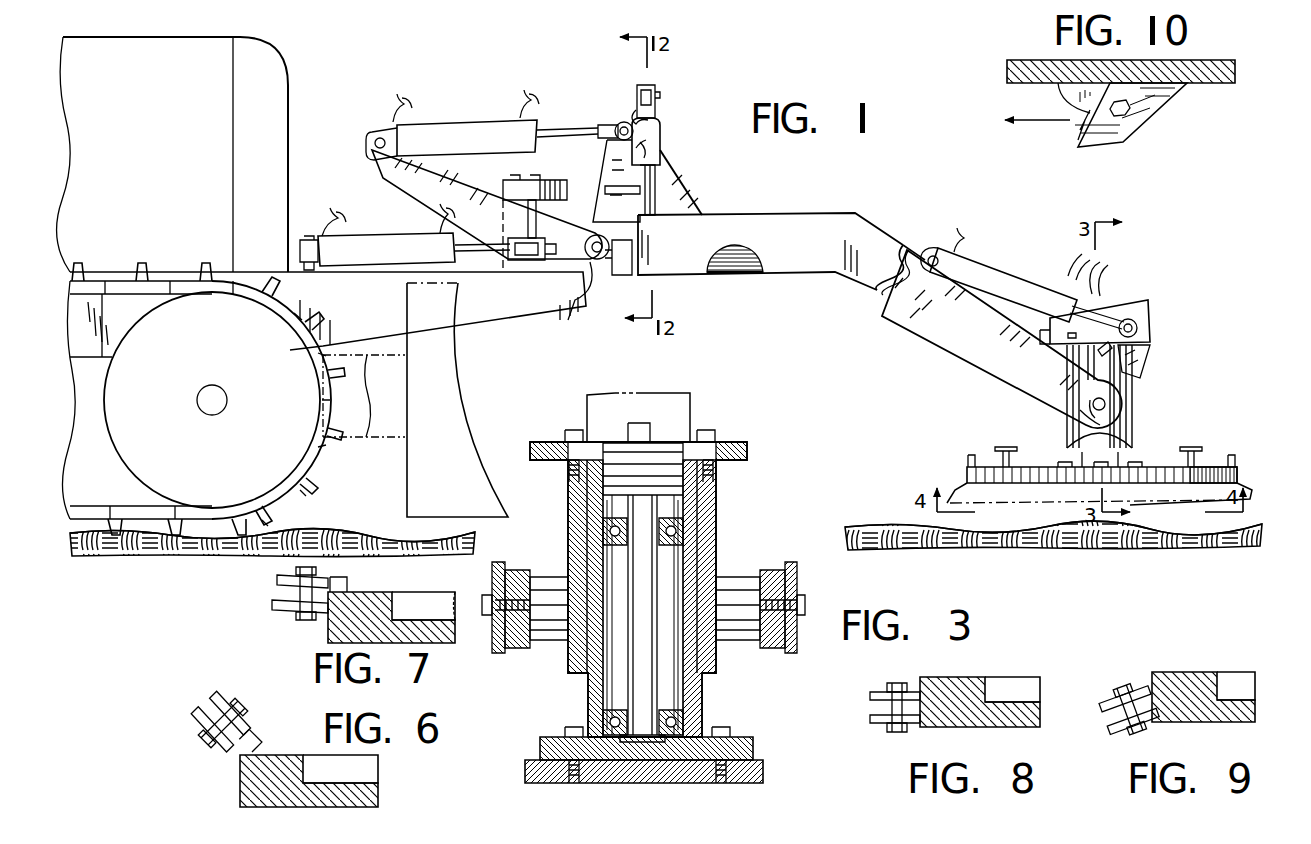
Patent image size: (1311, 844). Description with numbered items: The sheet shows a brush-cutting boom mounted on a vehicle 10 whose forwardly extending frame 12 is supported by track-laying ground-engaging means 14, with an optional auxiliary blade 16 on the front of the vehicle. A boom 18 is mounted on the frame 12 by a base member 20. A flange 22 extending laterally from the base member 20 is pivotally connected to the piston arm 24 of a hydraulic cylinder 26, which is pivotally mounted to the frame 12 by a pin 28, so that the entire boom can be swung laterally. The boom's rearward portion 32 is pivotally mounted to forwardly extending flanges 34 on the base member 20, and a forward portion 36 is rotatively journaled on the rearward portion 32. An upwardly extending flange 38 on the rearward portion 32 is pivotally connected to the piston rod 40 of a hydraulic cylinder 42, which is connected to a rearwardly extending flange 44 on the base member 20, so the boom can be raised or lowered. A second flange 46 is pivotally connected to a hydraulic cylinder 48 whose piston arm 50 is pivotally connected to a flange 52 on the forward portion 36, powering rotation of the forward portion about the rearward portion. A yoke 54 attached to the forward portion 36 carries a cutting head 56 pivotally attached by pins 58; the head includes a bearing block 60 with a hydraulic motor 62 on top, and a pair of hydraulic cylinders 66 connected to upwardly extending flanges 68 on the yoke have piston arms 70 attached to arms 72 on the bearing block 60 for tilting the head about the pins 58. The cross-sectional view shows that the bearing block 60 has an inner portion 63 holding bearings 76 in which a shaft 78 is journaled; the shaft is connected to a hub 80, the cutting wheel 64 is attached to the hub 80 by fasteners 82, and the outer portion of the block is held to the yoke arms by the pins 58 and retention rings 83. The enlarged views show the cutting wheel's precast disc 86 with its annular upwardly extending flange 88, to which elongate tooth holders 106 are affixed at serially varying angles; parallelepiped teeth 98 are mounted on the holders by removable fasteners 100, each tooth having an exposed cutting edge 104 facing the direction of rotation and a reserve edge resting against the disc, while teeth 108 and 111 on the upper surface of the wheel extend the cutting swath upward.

In FIG. 1, the vehicle 10 is at (302, 125).
In FIG. 1, the frame 12 is at (512, 312).
In FIG. 1, the ground-engaging means 14 is at (314, 478).
In FIG. 1, the auxiliary blade 16 is at (452, 396).
In FIG. 1, the boom 18 is at (822, 200).
In FIG. 1, the base member 20 is at (578, 190).
In FIG. 1, the flange 22 is at (556, 248).
In FIG. 1, the piston arm 24 is at (486, 258).
In FIG. 1, the hydraulic cylinder 26 is at (366, 236).
In FIG. 1, the pin 28 is at (325, 236).
In FIG. 1, the rearward portion 32 is at (617, 285).
In FIG. 1, the forwardly extending flanges 34 is at (592, 262).
In FIG. 1, the forward portion 36 is at (890, 246).
In FIG. 1, the upwardly extending flange 38 is at (617, 122).
In FIG. 1, the piston rod 40 is at (558, 128).
In FIG. 1, the hydraulic cylinder 42 is at (446, 125).
In FIG. 1, the flange 44 is at (398, 176).
In FIG. 1, the second flange 46 is at (686, 190).
In FIG. 1, the hydraulic cylinder 48 is at (665, 148).
In FIG. 1, the piston arm 50 is at (660, 106).
In FIG. 1, the flange 52 is at (706, 204).
In FIG. 1, the yoke 54 is at (962, 355).
In FIG. 3, the yoke 54 is at (514, 562).
In FIG. 1, the cutting head 56 is at (1162, 320).
In FIG. 3, the cutting head 56 is at (722, 508).
In FIG. 1, the pins 58 is at (1108, 405).
In FIG. 3, the pins 58 is at (490, 630).
In FIG. 1, the bearing block 60 is at (1134, 433).
In FIG. 3, the bearing block 60 is at (708, 536).
In FIG. 1, the hydraulic motor 62 is at (1148, 302).
In FIG. 3, the inner portion 63 is at (704, 694).
In FIG. 1, the cutting wheel 64 is at (1207, 460).
In FIG. 3, the cutting wheel 64 is at (768, 755).
In FIG. 1, the hydraulic cylinders 66 is at (992, 265).
In FIG. 1, the flanges 68 is at (932, 252).
In FIG. 1, the piston arms 70 is at (1126, 300).
In FIG. 1, the arms 72 is at (1142, 360).
In FIG. 3, the bearings 76 is at (610, 532).
In FIG. 3, the shaft 78 is at (640, 660).
In FIG. 3, the hub 80 is at (765, 765).
In FIG. 3, the fasteners 82 is at (548, 737).
In FIG. 3, the retention rings 83 is at (492, 592).
In FIG. 7, the precast disc 86 is at (424, 628).
In FIG. 6, the precast disc 86 is at (372, 802).
In FIG. 8, the precast disc 86 is at (1040, 710).
In FIG. 9, the precast disc 86 is at (1234, 705).
In FIG. 10, the precast disc 86 is at (1212, 83).
In FIG. 7, the annular upwardly extending flange 88 is at (328, 636).
In FIG. 6, the annular upwardly extending flange 88 is at (240, 786).
In FIG. 8, the annular upwardly extending flange 88 is at (970, 677).
In FIG. 9, the annular upwardly extending flange 88 is at (1178, 672).
In FIG. 7, the teeth 98 is at (277, 580).
In FIG. 6, the teeth 98 is at (215, 718).
In FIG. 8, the teeth 98 is at (872, 694).
In FIG. 9, the teeth 98 is at (1100, 700).
In FIG. 10, the teeth 98 is at (1118, 137).
In FIG. 10, the fasteners 100 is at (1080, 110).
In FIG. 10, the cutting edge 104 is at (1185, 62).
In FIG. 7, the tooth holders 106 is at (298, 594).
In FIG. 6, the tooth holders 106 is at (200, 745).
In FIG. 8, the tooth holders 106 is at (904, 700).
In FIG. 9, the tooth holders 106 is at (1118, 722).
In FIG. 10, the tooth holders 106 is at (1172, 105).
In FIG. 1, the teeth 108 is at (971, 455).
In FIG. 1, the teeth 111 is at (1008, 447).